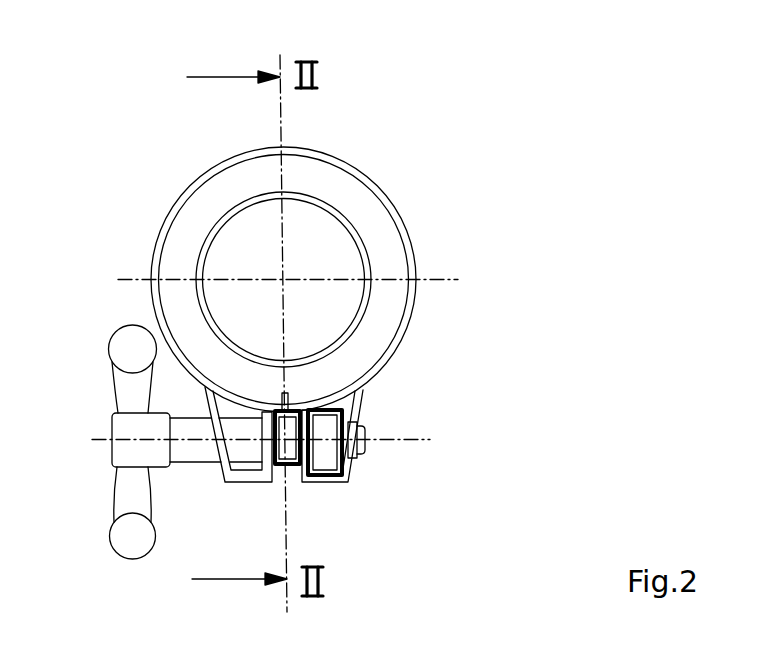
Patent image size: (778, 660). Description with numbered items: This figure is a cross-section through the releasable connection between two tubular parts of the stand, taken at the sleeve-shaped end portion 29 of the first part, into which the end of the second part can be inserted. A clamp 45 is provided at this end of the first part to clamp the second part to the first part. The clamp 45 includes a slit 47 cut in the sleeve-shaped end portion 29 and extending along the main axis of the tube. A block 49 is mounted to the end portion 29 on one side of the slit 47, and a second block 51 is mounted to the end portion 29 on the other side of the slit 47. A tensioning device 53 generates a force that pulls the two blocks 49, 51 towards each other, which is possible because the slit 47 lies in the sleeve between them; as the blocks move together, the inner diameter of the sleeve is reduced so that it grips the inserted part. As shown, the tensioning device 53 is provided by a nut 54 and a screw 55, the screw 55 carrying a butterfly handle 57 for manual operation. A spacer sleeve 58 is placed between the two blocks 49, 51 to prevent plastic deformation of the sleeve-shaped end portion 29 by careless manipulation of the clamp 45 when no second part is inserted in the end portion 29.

The end portion 29 is at (400, 352).
The clamp 45 is at (321, 456).
The slit 47 is at (287, 397).
The block 49 is at (247, 483).
The second block 51 is at (322, 483).
The tensioning device 53 is at (196, 480).
The nut 54 is at (335, 411).
The screw 55 is at (363, 457).
The butterfly handle 57 is at (113, 547).
The spacer sleeve 58 is at (287, 465).